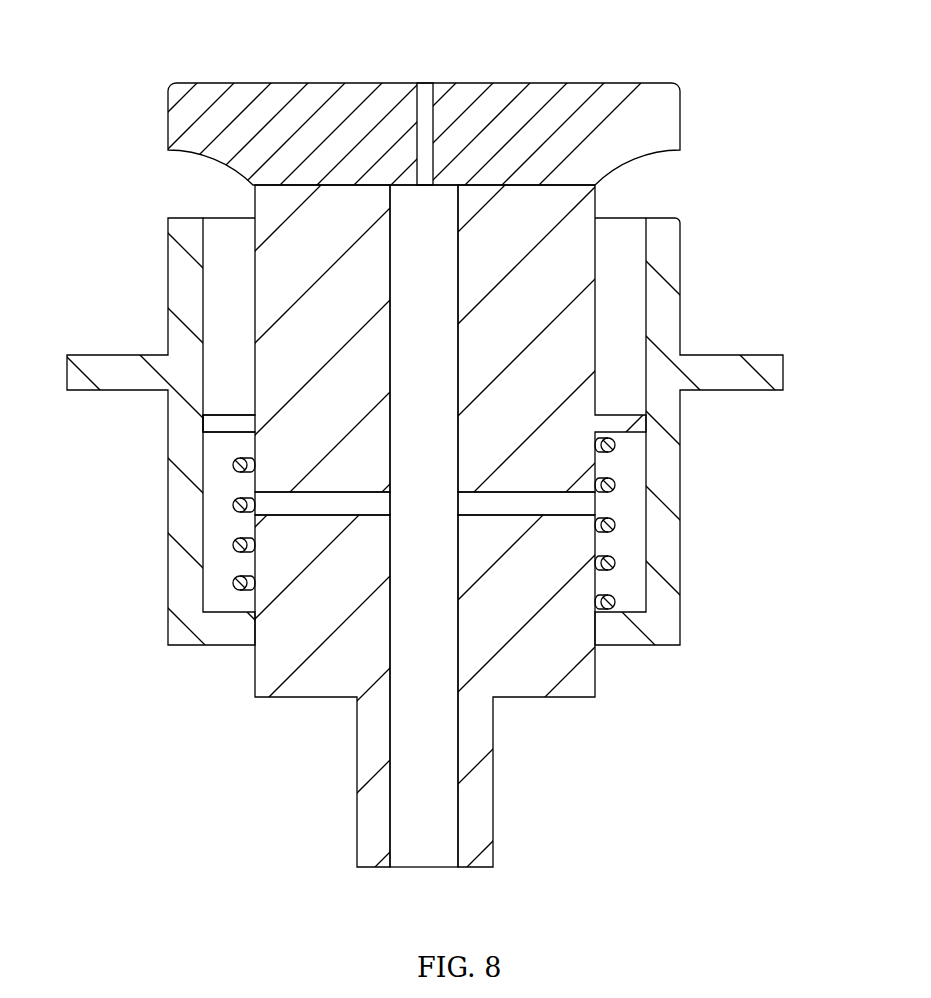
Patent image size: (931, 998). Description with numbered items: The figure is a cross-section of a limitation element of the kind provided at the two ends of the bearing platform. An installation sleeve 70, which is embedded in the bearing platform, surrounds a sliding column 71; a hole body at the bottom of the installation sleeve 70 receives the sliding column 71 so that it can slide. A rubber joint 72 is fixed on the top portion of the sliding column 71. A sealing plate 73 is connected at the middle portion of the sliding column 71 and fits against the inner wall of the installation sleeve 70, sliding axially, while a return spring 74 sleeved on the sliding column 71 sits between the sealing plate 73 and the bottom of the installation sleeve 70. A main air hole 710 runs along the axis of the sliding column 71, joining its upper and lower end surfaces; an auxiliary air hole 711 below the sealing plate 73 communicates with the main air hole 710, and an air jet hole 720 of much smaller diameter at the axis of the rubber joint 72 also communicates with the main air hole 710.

The installation sleeve 70 is at (450, 499).
The sliding column 71 is at (465, 549).
The rubber joint 72 is at (362, 150).
The air jet hole 720 is at (360, 92).
The sealing plate 73 is at (137, 502).
The return spring 74 is at (700, 523).
The main air hole 710 is at (585, 526).
The auxiliary air hole 711 is at (310, 574).